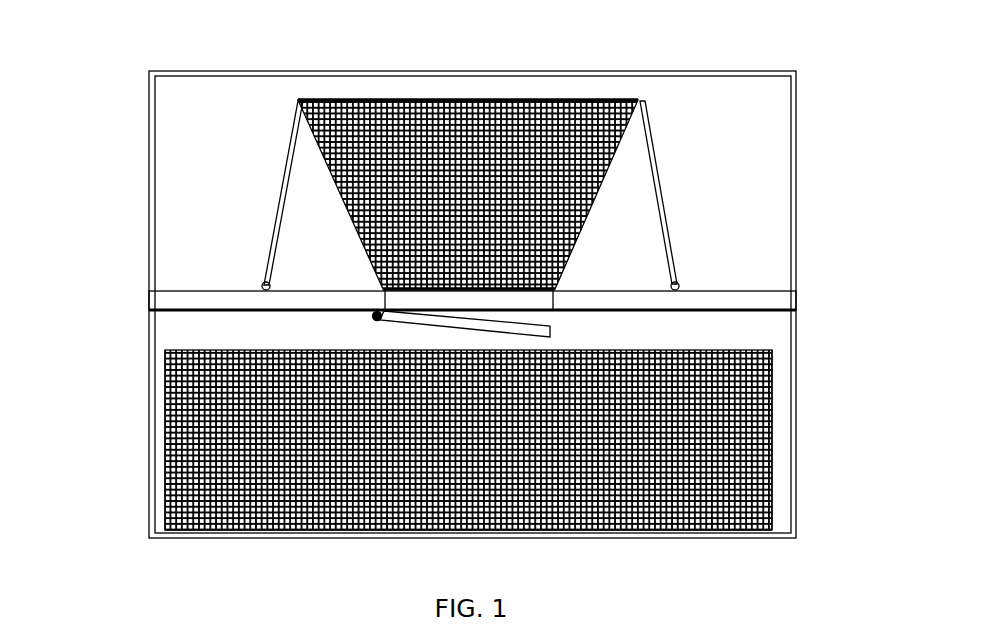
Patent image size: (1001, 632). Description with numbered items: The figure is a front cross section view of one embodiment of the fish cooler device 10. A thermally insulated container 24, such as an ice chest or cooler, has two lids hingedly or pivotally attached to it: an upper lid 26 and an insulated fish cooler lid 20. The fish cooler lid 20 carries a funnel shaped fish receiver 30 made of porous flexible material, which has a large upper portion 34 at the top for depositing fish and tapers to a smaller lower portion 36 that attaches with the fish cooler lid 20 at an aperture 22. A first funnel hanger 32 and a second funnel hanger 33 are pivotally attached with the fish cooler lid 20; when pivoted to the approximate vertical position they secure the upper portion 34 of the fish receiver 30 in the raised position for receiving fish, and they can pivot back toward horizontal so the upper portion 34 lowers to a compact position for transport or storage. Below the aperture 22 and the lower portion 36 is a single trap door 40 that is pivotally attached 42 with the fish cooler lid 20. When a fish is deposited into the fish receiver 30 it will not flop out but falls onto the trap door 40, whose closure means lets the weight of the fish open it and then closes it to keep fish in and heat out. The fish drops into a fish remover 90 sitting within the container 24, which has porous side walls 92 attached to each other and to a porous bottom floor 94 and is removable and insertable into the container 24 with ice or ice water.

The fish cooler device 10 is at (846, 293).
The fish cooler lid 20 is at (787, 290).
The aperture 22 is at (375, 291).
The thermally insulated container 24 is at (786, 327).
The upper lid 26 is at (788, 147).
The funnel shaped fish receiver 30 is at (598, 123).
The first funnel hanger 32 is at (668, 248).
The second funnel hanger 33 is at (273, 185).
The upper portion 34 is at (588, 92).
The lower portion 36 is at (375, 267).
The trap door 40 is at (527, 322).
The pivot attachment 42 is at (366, 309).
The fish remover 90 is at (729, 420).
The porous side walls 92 is at (764, 377).
The porous bottom floor 94 is at (753, 521).